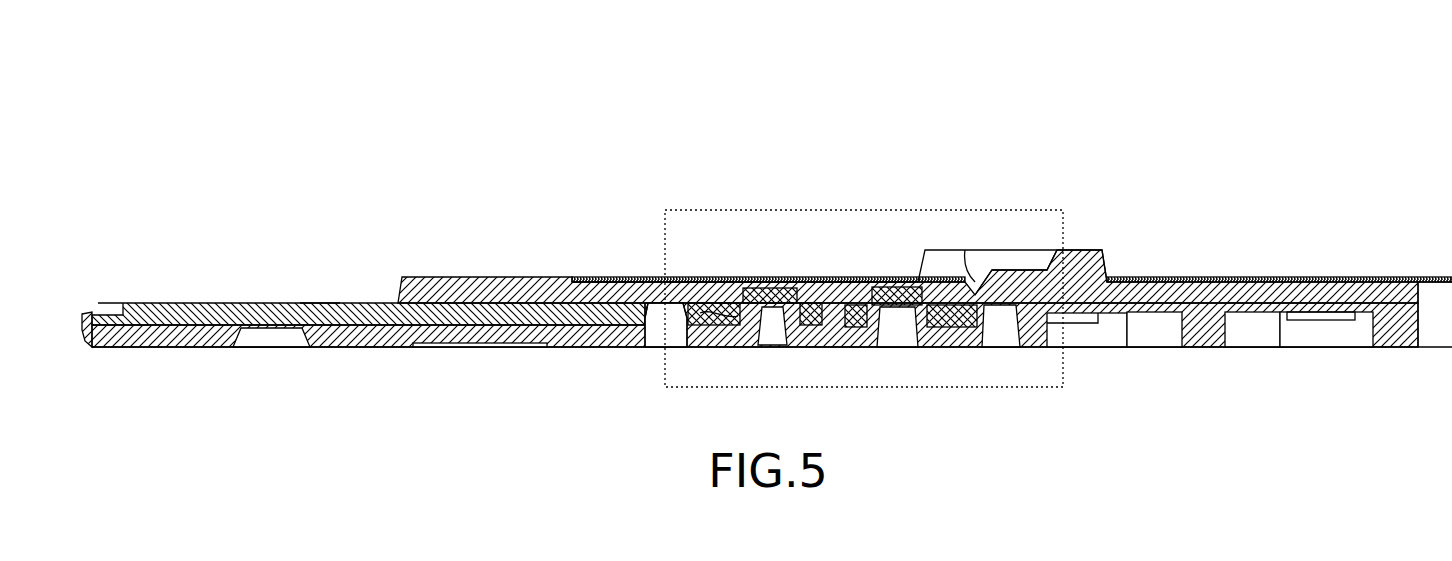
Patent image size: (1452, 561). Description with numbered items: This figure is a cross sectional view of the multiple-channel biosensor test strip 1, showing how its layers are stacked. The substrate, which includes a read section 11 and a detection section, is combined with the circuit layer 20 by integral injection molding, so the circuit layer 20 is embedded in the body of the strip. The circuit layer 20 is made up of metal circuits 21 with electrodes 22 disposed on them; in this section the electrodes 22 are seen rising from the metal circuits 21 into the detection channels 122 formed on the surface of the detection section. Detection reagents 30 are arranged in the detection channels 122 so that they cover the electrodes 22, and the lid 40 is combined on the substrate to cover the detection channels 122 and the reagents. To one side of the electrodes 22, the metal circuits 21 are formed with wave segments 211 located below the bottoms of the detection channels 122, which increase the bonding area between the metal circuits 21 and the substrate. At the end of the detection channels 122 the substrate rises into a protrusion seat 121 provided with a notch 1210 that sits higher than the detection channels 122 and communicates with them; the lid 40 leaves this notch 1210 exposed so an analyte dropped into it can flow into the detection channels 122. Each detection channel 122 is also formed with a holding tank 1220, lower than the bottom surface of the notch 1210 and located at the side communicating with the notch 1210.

The multiple-channel biosensor test strip 1 is at (758, 82).
The read section 11 is at (477, 277).
The circuit layer 20 is at (251, 299).
The metal circuits 21 is at (323, 303).
The wave segments 211 is at (715, 325).
The electrodes 22 is at (773, 277).
The detection reagents 30 is at (733, 277).
The lid 40 is at (823, 277).
The protrusion seat 121 is at (1077, 250).
The notch 1210 is at (1023, 250).
The holding tank 1220 is at (950, 250).
The detection channels 122 is at (850, 275).